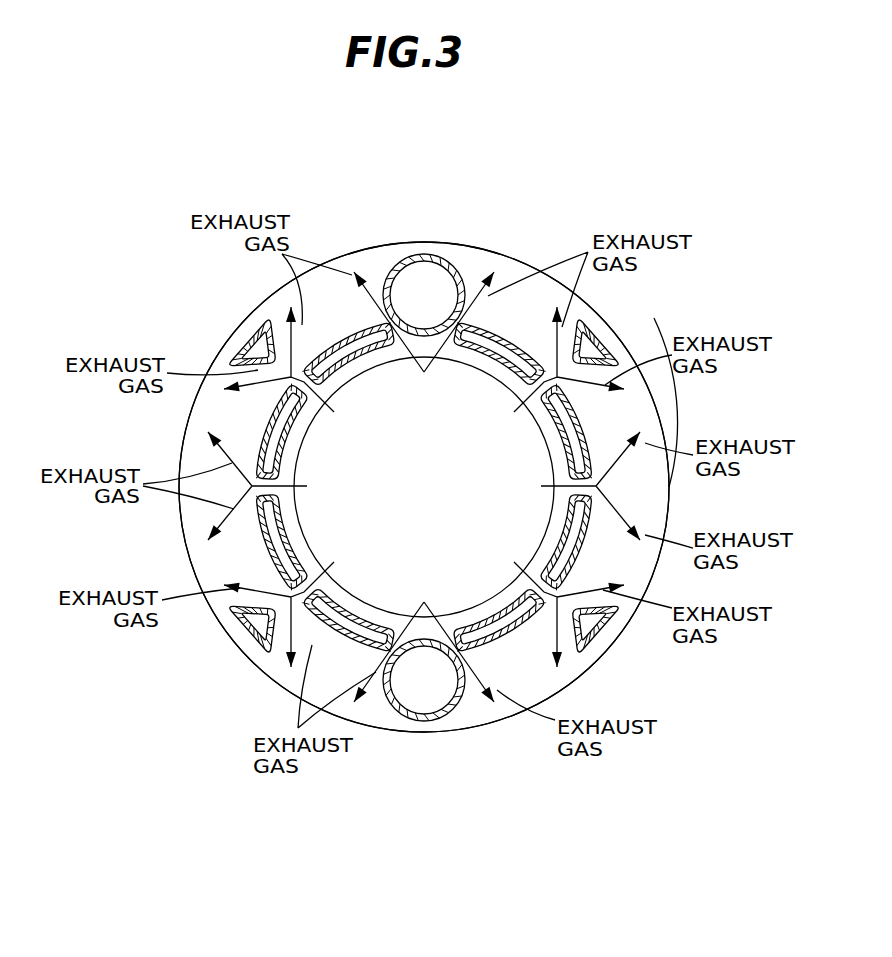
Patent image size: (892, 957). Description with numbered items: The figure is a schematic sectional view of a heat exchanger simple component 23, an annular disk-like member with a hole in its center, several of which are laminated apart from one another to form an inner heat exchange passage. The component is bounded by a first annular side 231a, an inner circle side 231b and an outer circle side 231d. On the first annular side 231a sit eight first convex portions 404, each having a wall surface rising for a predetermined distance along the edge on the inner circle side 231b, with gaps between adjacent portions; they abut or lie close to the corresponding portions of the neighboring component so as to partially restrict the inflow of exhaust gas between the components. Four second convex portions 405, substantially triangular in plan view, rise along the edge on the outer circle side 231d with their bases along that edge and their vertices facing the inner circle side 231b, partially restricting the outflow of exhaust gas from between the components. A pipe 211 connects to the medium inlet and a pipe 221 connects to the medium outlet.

The heat exchanger simple component 23 is at (323, 234).
The pipe 221 is at (428, 254).
The pipe 211 is at (457, 708).
The first convex portion 404 is at (346, 366).
The second convex portion 405 is at (246, 347).
The first annular side 231a is at (655, 488).
The inner circle side 231b is at (548, 471).
The outer circle side 231d is at (668, 400).